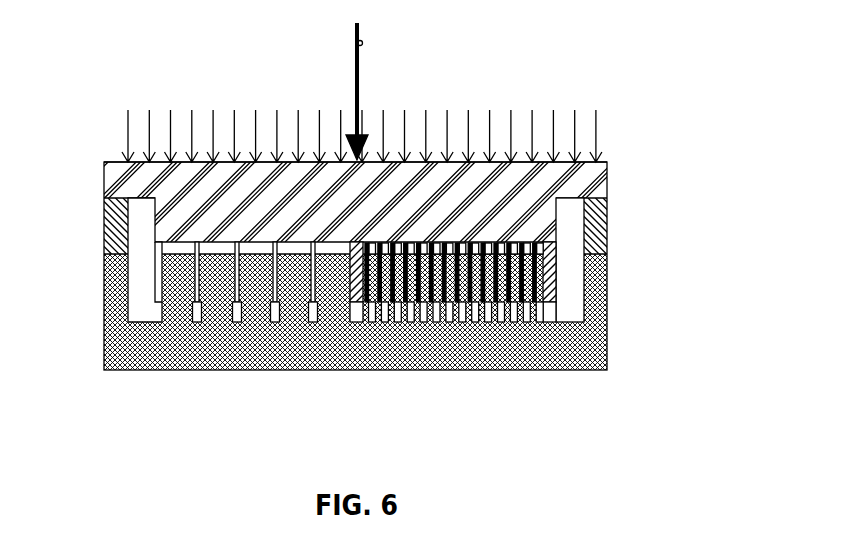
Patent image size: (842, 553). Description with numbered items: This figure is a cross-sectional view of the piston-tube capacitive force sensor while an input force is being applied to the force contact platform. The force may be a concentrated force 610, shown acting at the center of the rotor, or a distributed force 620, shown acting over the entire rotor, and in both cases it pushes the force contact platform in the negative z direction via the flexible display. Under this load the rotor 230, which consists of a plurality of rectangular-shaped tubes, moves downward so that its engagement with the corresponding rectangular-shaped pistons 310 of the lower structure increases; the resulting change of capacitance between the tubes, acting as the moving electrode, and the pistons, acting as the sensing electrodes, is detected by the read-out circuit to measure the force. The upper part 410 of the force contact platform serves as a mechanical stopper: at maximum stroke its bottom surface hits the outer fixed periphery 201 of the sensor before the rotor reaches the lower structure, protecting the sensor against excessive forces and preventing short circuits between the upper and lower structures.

The upper part of the force contact platform 410 is at (607, 180).
The outer fixed periphery 201 is at (607, 232).
The rotor 230 is at (558, 274).
The piston 310 is at (550, 314).
The concentrated force 610 is at (352, 72).
The distributed force 620 is at (128, 132).